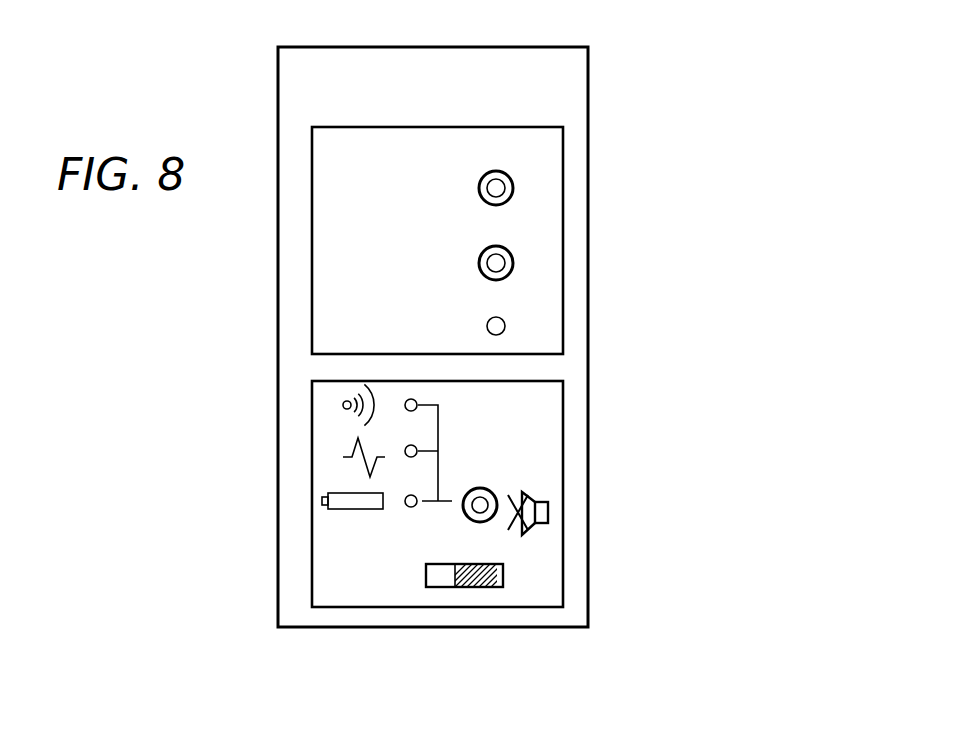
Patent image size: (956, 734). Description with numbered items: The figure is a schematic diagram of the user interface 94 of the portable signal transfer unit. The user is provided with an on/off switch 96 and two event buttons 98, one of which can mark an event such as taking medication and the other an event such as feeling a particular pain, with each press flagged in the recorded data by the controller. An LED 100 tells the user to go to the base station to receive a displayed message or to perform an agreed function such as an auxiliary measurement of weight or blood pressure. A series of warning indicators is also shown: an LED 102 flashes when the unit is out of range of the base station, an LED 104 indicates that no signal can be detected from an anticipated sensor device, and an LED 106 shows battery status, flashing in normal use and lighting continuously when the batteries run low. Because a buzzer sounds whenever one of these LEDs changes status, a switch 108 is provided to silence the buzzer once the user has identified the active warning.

The user interface 94 is at (668, 107).
The on/off switch 96 is at (571, 573).
The event buttons 98 is at (541, 224).
The LED 100 is at (541, 325).
The LED 102 is at (322, 405).
The LED 104 is at (330, 451).
The LED 106 is at (314, 501).
The switch 108 is at (571, 513).